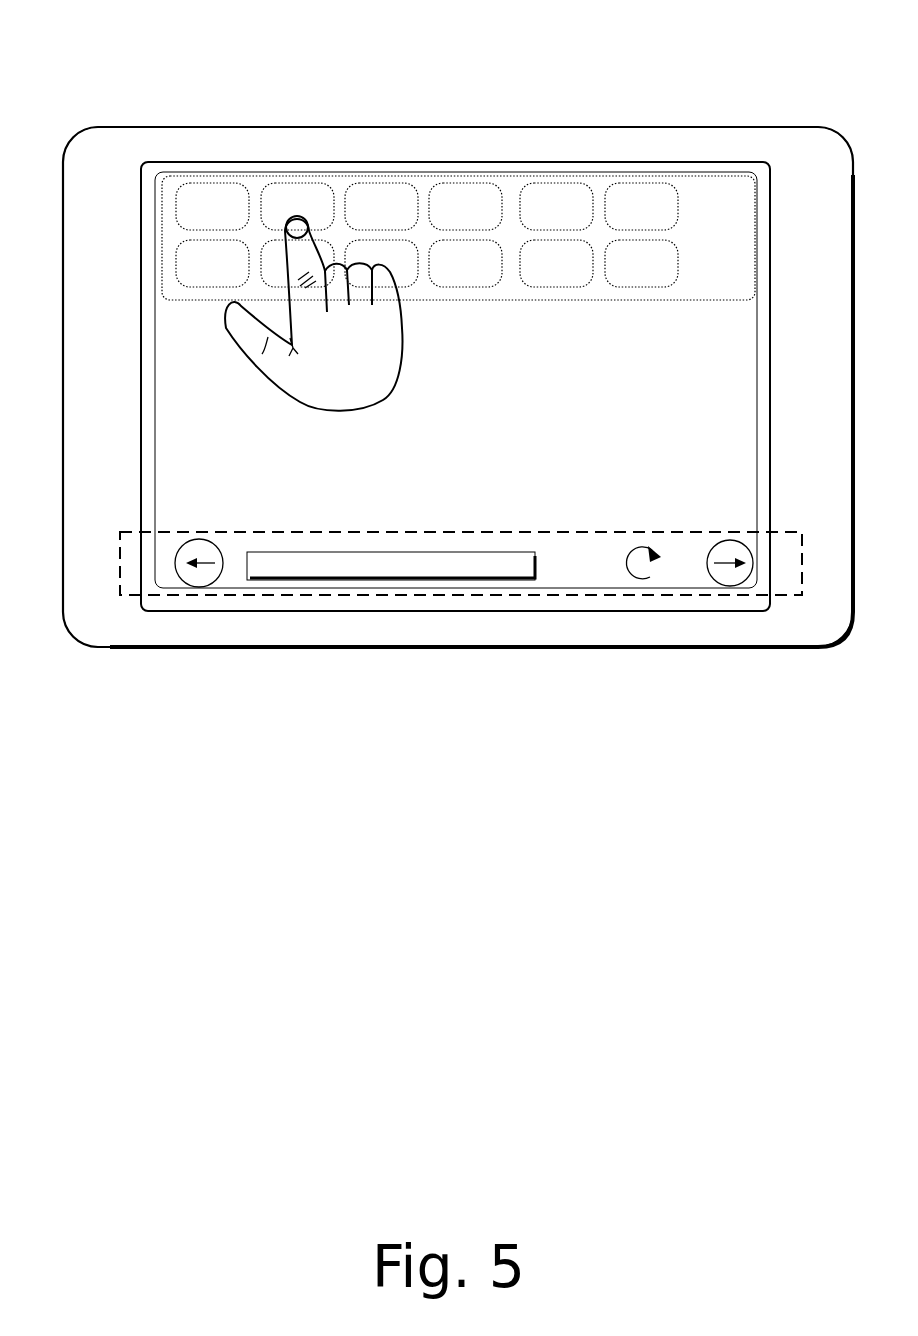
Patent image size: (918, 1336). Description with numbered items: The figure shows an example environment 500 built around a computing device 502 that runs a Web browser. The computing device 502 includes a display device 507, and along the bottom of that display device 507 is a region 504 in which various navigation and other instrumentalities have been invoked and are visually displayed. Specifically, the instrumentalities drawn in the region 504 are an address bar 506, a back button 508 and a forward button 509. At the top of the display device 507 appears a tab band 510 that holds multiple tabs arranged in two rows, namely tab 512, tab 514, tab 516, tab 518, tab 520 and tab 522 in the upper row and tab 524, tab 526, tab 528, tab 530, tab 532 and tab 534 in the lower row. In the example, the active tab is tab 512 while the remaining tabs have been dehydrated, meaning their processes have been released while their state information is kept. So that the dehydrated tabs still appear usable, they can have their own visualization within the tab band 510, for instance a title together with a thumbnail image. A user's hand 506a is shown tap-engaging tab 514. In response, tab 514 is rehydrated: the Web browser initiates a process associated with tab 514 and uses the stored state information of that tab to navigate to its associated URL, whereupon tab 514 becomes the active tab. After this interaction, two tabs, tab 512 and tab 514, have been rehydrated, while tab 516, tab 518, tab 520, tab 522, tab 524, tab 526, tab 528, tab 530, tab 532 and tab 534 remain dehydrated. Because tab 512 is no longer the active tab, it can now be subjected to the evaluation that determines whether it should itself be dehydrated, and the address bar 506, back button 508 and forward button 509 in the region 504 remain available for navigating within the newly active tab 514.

The environment 500 is at (696, 92).
The computing device 502 is at (272, 116).
The region 504 is at (547, 593).
The address bar 506 is at (390, 552).
The user's hand 506a is at (369, 350).
The display device 507 is at (457, 235).
The back button 508 is at (199, 587).
The forward button 509 is at (728, 586).
The tab band 510 is at (628, 300).
The tab 512 is at (212, 206).
The tab 514 is at (297, 206).
The tab 516 is at (381, 206).
The tab 518 is at (465, 206).
The tab 520 is at (556, 206).
The tab 522 is at (641, 206).
The tab 524 is at (212, 263).
The tab 526 is at (297, 263).
The tab 528 is at (381, 263).
The tab 530 is at (465, 263).
The tab 532 is at (556, 263).
The tab 534 is at (641, 263).